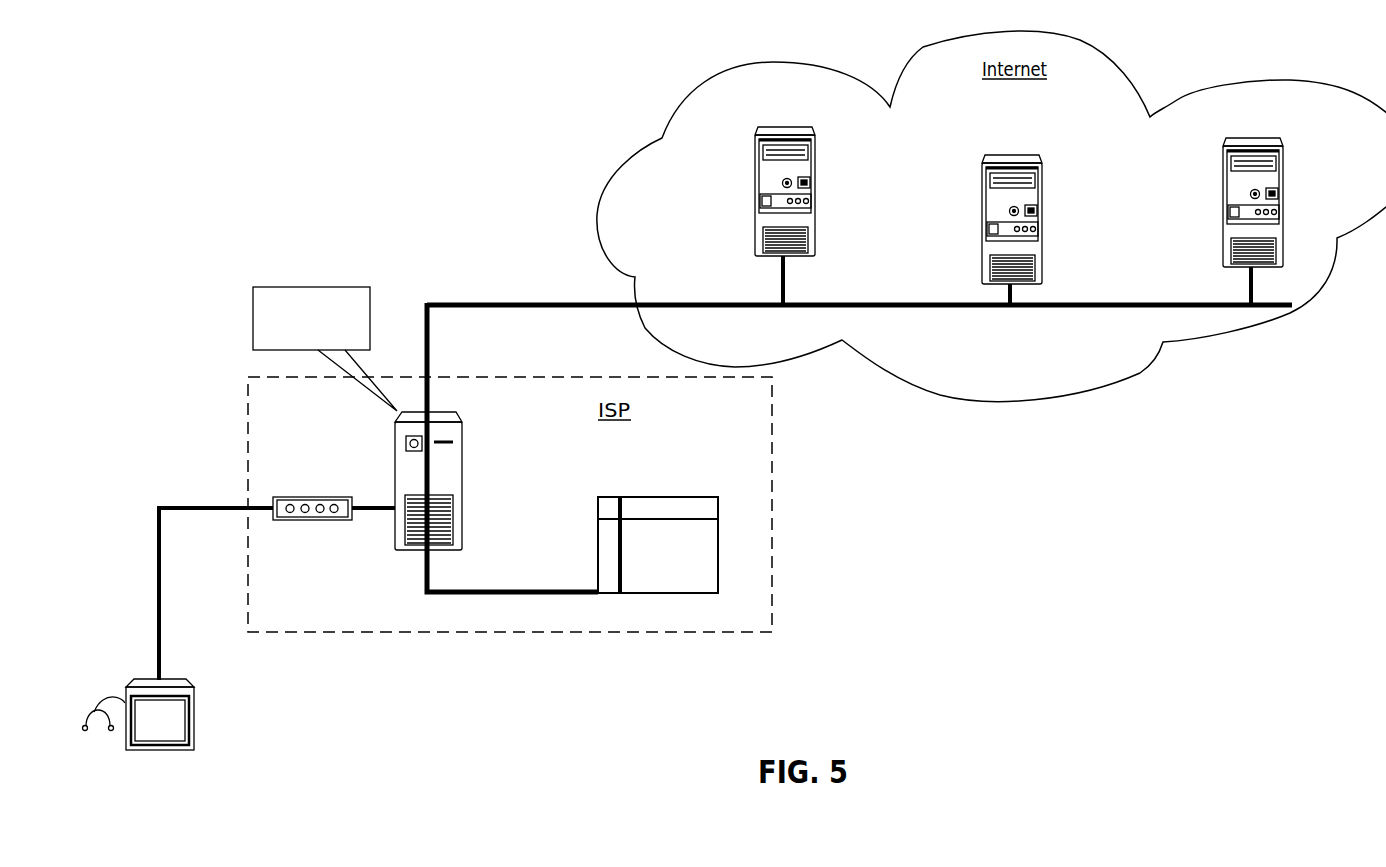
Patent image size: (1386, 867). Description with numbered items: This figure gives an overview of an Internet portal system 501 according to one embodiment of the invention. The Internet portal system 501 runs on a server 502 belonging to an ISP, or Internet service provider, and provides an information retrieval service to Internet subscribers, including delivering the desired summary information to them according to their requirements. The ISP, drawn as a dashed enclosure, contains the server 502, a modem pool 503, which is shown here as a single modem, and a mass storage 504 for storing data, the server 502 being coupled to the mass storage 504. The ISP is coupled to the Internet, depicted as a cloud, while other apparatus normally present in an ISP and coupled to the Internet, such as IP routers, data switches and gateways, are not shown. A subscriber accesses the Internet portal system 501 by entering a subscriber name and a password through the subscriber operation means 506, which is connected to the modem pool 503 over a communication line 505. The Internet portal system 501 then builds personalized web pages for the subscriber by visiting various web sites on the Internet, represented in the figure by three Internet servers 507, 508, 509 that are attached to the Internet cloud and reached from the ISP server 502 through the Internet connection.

The Internet portal system 501 is at (269, 287).
The server 502 is at (394, 458).
The modem pool 503 is at (318, 522).
The mass storage 504 is at (662, 497).
The communication link / cable 505 is at (157, 595).
The subscriber operation means 506 is at (195, 718).
The Internet server 507 is at (781, 127).
The Internet server 508 is at (1009, 155).
The Internet server 509 is at (1251, 137).